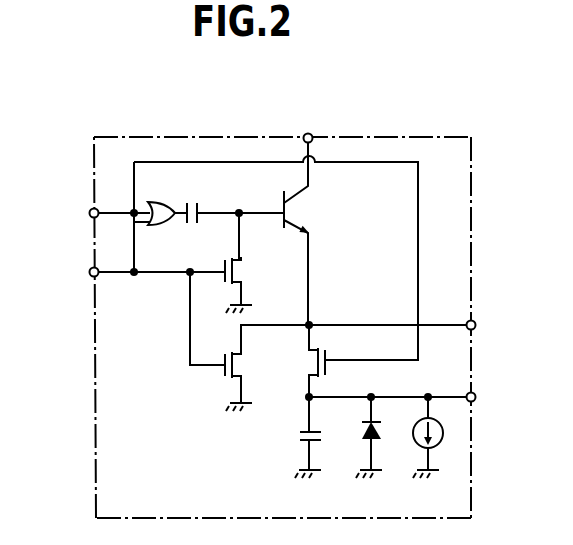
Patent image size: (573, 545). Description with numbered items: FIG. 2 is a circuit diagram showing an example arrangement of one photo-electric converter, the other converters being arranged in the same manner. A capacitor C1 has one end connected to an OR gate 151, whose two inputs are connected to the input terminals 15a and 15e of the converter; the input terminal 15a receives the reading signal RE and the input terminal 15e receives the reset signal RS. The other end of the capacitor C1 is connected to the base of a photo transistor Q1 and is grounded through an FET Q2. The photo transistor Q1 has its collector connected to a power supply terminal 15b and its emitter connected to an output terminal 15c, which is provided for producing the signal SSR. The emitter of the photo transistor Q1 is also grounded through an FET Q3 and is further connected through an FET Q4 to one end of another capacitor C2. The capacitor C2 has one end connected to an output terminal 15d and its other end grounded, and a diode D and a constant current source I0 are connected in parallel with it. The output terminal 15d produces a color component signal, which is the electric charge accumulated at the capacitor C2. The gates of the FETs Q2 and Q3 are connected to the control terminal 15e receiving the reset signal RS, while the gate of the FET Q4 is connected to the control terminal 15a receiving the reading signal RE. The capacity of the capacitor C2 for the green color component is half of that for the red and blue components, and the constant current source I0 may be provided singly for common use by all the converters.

The input terminal 15a is at (90, 213).
The power supply terminal 15b is at (310, 133).
The output terminal 15c is at (476, 325).
The output terminal 15d is at (474, 401).
The input terminal 15e is at (101, 263).
The OR gate 151 is at (165, 226).
The capacitor C1 is at (229, 198).
The capacitor C2 is at (320, 437).
The photo transistor Q1 is at (307, 233).
The FET Q2 is at (245, 263).
The FET Q3 is at (348, 368).
The FET Q4 is at (329, 361).
The diode D is at (378, 437).
The constant current source I0 is at (436, 437).